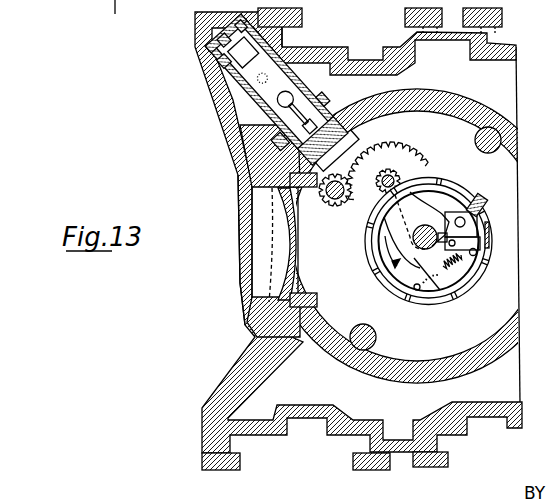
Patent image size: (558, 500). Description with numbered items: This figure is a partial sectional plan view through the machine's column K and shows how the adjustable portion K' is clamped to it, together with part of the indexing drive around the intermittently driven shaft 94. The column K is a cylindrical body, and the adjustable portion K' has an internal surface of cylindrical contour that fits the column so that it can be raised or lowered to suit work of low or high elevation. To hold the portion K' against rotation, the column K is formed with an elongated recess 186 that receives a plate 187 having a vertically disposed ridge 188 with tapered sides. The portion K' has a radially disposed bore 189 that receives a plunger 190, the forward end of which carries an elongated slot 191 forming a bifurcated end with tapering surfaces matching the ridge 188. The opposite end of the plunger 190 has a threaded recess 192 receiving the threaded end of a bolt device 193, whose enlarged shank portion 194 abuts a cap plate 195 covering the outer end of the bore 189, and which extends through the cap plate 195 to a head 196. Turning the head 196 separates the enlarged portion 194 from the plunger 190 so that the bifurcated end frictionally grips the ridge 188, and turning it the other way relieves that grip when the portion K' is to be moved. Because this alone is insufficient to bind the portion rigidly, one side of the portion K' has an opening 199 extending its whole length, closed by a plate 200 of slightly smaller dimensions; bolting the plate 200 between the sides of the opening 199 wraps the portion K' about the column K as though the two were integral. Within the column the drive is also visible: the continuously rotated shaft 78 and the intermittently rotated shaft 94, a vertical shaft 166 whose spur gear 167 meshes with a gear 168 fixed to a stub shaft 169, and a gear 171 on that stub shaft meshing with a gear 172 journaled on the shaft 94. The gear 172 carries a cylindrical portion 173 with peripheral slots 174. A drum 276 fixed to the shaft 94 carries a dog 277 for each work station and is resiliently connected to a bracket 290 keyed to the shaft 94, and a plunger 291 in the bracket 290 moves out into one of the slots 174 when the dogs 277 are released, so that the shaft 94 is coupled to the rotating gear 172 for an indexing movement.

The column K is at (414, 224).
The adjustable portion K' is at (358, 239).
The shaft 78 is at (500, 144).
The shaft 94 is at (394, 289).
The vertically-disposed shaft 166 is at (327, 192).
The spur gear 167 is at (328, 212).
The gear 168 is at (412, 148).
The stub shaft 169 is at (397, 179).
The gear 171 is at (396, 177).
The gear 172 is at (368, 222).
The cylindrical portion 173 is at (376, 266).
The slots 174 is at (372, 238).
The elongated recess 186 is at (364, 121).
The plate 187 is at (318, 122).
The ridge 188 is at (320, 97).
The bore 189 is at (298, 124).
The plunger 190 is at (263, 95).
The elongated slot 191 is at (290, 136).
The threaded recess 192 is at (282, 49).
The bolt device 193 is at (218, 38).
The enlarged shank portion 194 is at (242, 70).
The cap plate 195 is at (220, 62).
The head 196 is at (232, 38).
The opening 199 is at (270, 152).
The plate 200 is at (240, 212).
The drum 276 is at (396, 296).
The dog 277 is at (380, 284).
The bracket 290 is at (476, 198).
The plunger 291 is at (494, 240).